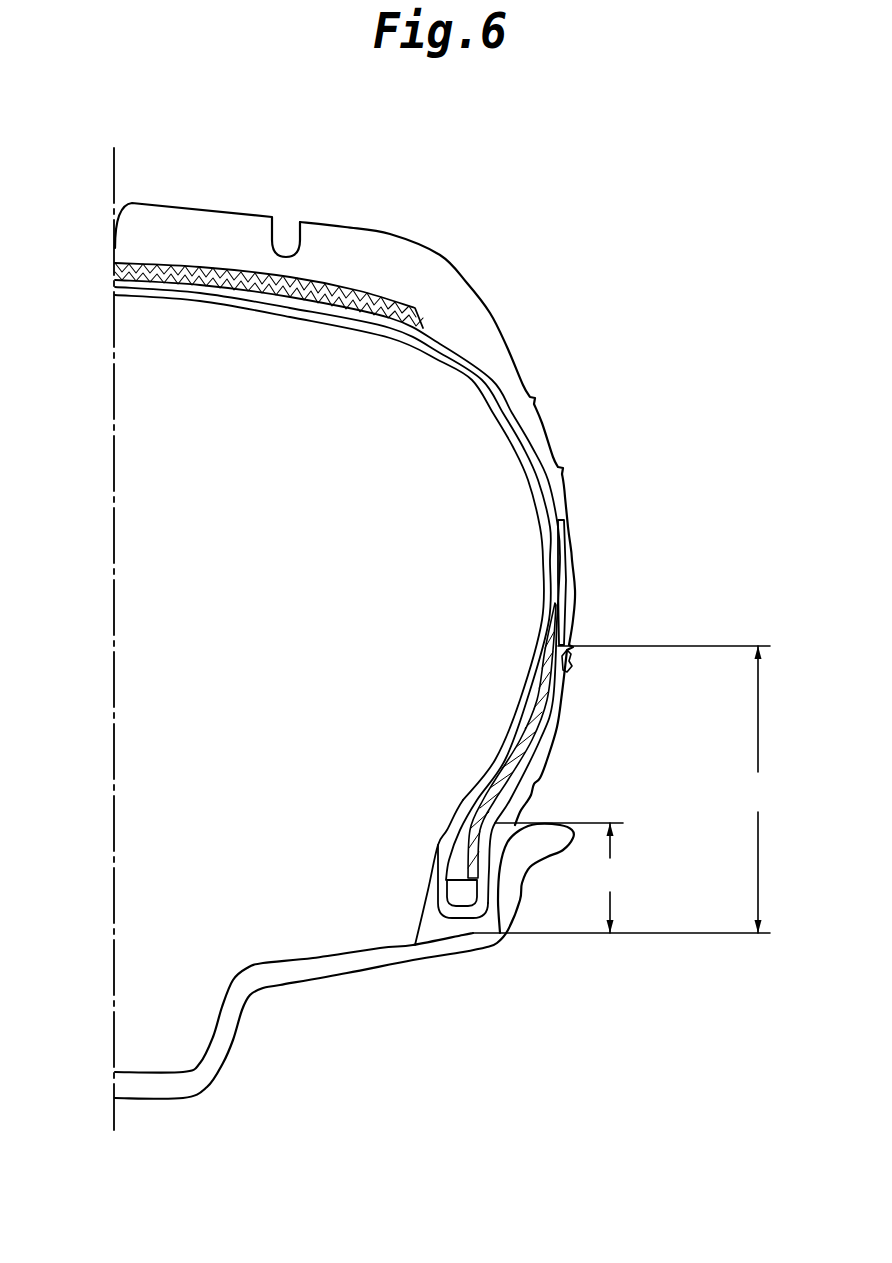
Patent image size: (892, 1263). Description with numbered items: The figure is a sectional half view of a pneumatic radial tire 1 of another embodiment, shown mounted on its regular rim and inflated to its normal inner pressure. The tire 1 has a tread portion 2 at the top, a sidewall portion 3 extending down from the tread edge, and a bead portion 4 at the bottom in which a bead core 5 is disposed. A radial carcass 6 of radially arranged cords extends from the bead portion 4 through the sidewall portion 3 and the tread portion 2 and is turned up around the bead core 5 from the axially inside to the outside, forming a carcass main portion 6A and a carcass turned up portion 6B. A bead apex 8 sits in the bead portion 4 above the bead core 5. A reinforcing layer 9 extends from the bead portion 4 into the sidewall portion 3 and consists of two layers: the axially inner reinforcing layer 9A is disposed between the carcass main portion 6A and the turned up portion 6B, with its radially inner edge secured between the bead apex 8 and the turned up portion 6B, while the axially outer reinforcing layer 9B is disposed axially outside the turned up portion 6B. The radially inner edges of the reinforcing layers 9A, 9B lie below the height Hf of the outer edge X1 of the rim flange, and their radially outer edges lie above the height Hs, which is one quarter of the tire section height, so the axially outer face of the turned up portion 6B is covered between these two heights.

The tire 1 is at (480, 207).
The tread portion 2 is at (210, 200).
The sidewall portion 3 is at (594, 582).
The bead portion 4 is at (400, 871).
The bead core 5 is at (461, 897).
The radial carcass 6 is at (382, 476).
The carcass main portion 6A is at (532, 445).
The carcass turned up portion 6B is at (560, 542).
The bead apex 8 is at (462, 863).
The reinforcing layer 9 is at (678, 653).
The axially inner reinforcing layer 9A is at (548, 693).
The axially outer reinforcing layer 9B is at (570, 670).
The outer edge of the rim flange X1 is at (548, 823).
The height Hs is at (752, 789).
The height of the flange outer edge Hf is at (610, 878).